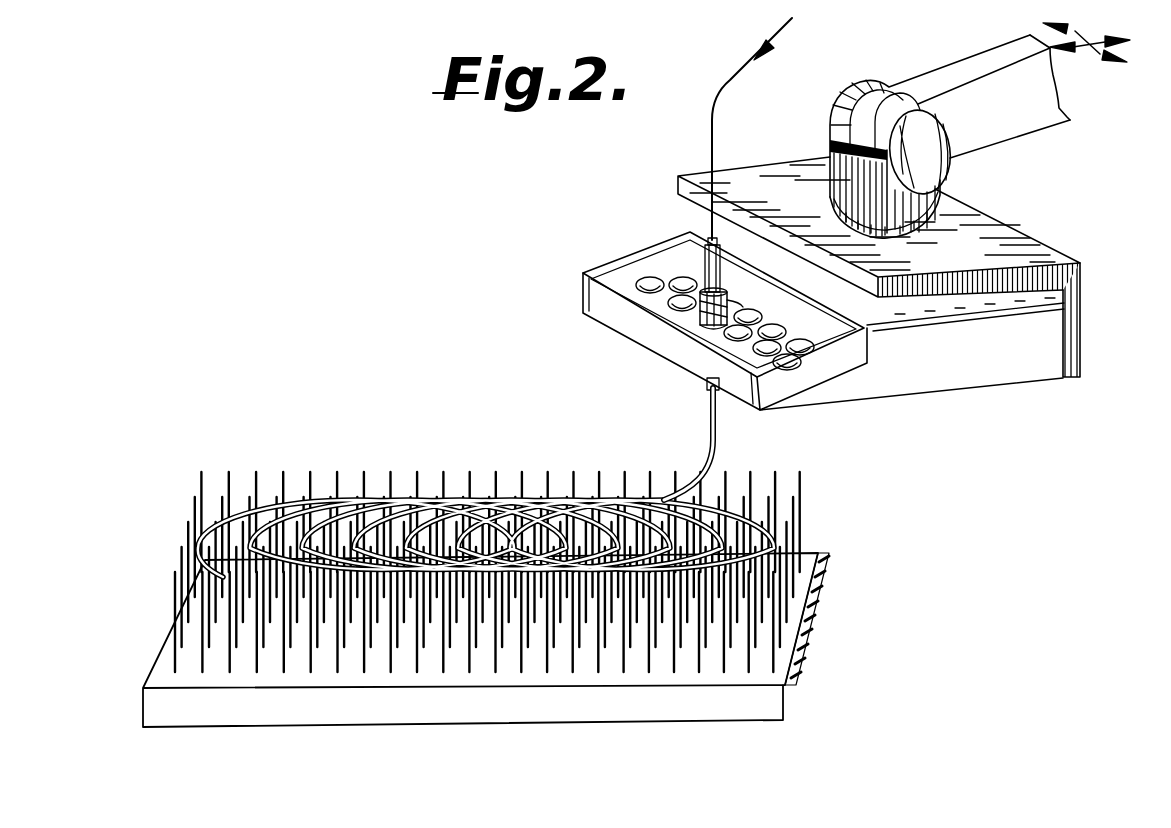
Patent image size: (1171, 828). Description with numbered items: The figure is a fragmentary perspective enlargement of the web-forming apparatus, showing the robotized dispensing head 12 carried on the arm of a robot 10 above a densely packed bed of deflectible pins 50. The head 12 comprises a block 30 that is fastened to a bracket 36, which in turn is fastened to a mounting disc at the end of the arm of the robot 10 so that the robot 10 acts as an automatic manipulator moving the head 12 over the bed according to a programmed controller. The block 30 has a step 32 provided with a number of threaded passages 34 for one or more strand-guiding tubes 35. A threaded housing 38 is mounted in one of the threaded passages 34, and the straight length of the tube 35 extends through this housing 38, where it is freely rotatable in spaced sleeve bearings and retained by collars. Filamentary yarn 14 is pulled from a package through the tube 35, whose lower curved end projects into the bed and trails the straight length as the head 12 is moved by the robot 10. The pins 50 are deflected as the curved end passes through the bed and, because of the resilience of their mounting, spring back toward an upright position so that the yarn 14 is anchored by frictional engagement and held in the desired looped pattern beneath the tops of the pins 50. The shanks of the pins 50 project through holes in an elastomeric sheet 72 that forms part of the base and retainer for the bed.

The robot 10 is at (982, 127).
The dispensing head 12 is at (920, 296).
The filamentary yarn 14 is at (712, 117).
The block 30 is at (1016, 367).
The step 32 is at (726, 335).
The threaded passages 34 is at (678, 276).
The strand-guiding tube 35 is at (708, 427).
The bracket 36 is at (1070, 310).
The threaded housing 38 is at (700, 322).
The pins 50 is at (788, 527).
The elastomeric sheet 72 is at (523, 713).